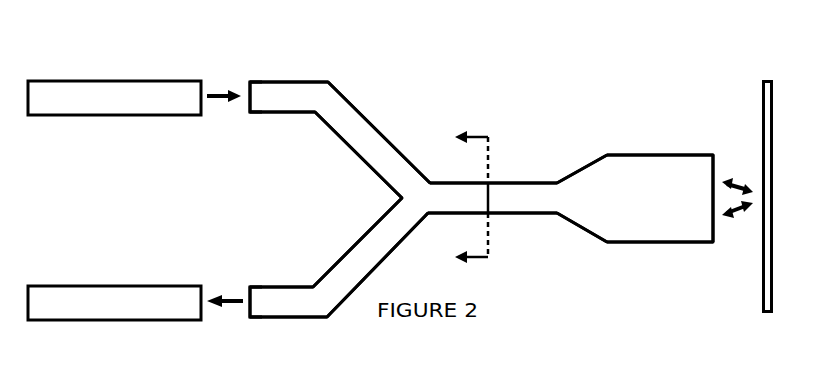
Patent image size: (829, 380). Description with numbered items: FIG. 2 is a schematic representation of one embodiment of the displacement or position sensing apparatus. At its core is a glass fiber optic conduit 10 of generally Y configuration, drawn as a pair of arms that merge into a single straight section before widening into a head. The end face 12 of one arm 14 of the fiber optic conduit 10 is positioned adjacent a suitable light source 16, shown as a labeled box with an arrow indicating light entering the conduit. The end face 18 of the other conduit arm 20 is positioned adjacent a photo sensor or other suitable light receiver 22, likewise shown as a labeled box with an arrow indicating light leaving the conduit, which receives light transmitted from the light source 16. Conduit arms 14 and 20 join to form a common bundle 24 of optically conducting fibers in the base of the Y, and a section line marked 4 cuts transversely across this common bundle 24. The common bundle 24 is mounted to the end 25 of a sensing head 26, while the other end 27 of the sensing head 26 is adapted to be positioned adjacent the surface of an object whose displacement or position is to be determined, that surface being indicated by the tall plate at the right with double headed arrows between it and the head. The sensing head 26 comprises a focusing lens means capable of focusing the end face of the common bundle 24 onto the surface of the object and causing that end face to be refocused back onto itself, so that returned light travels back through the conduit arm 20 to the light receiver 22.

The glass fiber optic conduit 10 is at (523, 97).
The end face 12 is at (254, 69).
The arm 14 is at (350, 102).
The light source 16 is at (172, 80).
The end face 18 is at (245, 257).
The conduit arm 20 is at (330, 267).
The light receiver 22 is at (148, 285).
The common bundle 24 is at (540, 202).
The end of sensing head 25 is at (585, 165).
The sensing head 26 is at (657, 168).
The other end of sensing head 27 is at (677, 243).
The section line 4- 4 is at (464, 197).